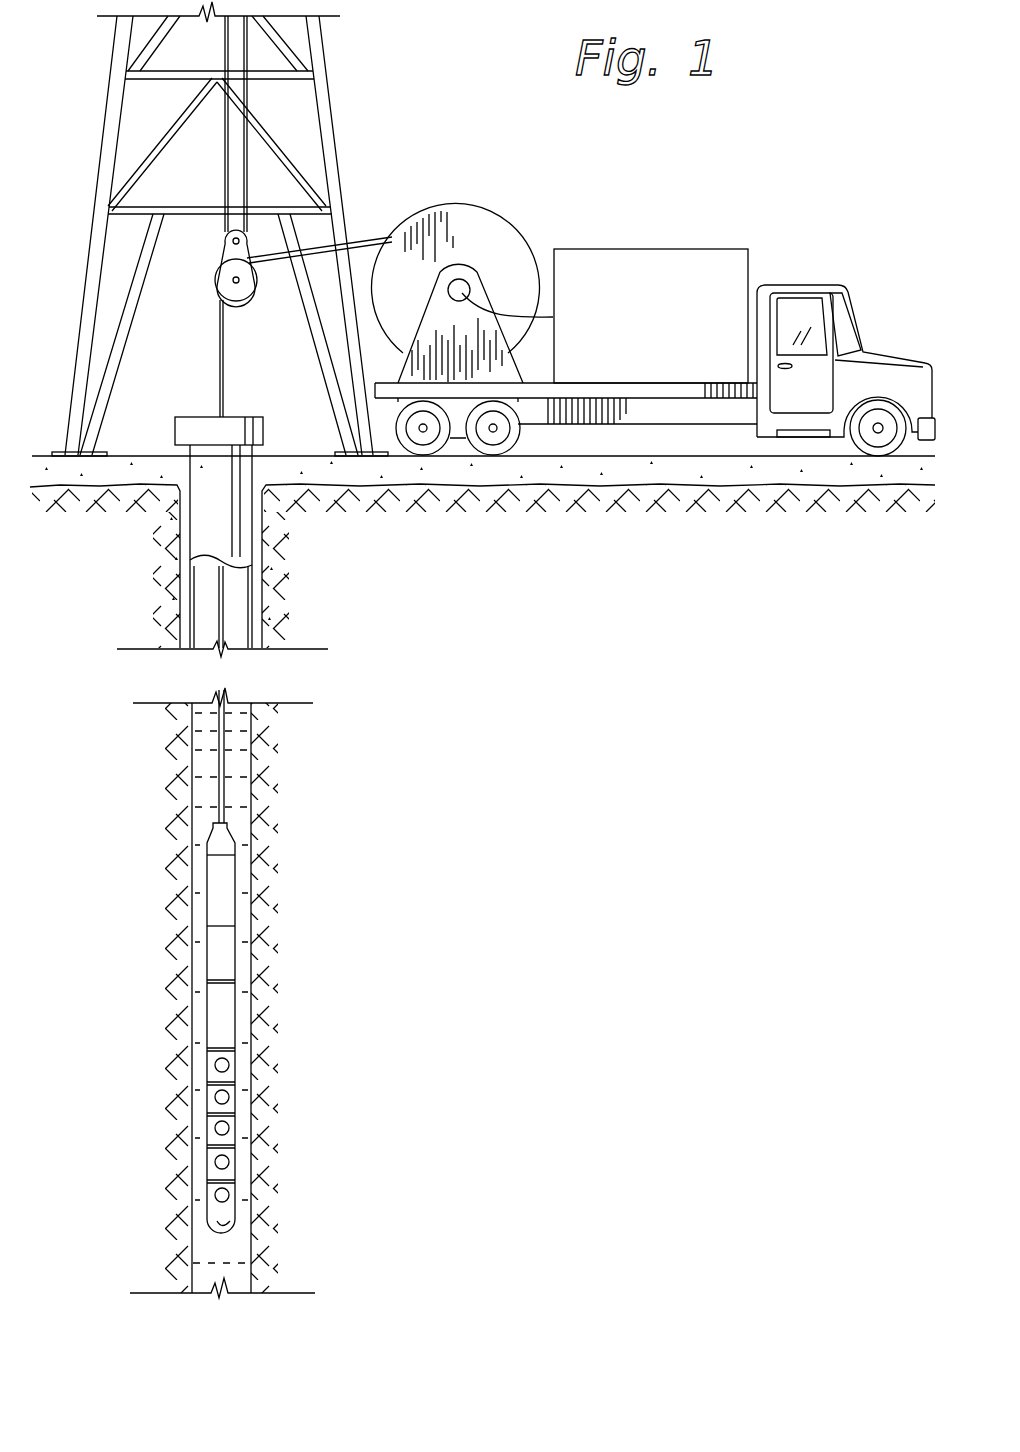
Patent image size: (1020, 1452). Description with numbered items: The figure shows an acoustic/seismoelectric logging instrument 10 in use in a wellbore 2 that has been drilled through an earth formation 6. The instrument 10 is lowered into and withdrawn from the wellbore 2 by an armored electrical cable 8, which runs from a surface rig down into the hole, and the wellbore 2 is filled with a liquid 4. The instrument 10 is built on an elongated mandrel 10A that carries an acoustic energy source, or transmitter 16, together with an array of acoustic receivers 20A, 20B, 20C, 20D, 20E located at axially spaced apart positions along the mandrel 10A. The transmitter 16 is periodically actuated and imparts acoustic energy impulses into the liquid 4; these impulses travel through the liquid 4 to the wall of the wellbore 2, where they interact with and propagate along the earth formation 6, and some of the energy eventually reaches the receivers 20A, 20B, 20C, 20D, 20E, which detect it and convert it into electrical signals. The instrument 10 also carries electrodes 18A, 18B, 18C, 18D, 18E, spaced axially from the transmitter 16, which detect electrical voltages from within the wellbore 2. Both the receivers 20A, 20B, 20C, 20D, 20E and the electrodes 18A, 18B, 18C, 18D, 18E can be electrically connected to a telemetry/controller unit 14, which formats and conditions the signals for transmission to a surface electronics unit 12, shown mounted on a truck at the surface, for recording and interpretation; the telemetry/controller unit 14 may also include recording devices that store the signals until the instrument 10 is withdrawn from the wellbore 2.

The wellbore 2 is at (237, 787).
The liquid 4 is at (203, 768).
The earth formation 6 is at (436, 882).
The armored electrical cable 8 is at (222, 742).
The instrument 10 is at (204, 828).
The elongated mandrel 10A is at (228, 948).
The surface electronics unit 12 is at (672, 249).
The telemetry/controller unit 14 is at (228, 878).
The transmitter 16 is at (210, 982).
The electrode 18A is at (208, 1049).
The electrode 18B is at (208, 1082).
The electrode 18C is at (208, 1113).
The electrode 18D is at (208, 1146).
The electrode 18E is at (208, 1180).
The acoustic receiver 20A is at (229, 1064).
The acoustic receiver 20B is at (229, 1096).
The acoustic receiver 20C is at (229, 1128).
The acoustic receiver 20D is at (229, 1162).
The acoustic receiver 20E is at (229, 1195).